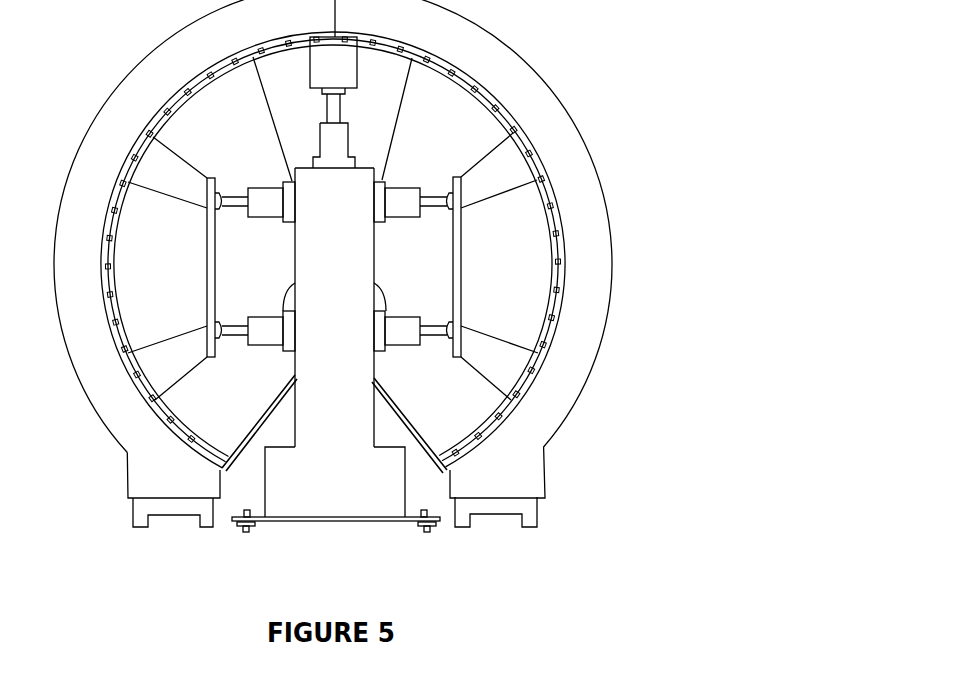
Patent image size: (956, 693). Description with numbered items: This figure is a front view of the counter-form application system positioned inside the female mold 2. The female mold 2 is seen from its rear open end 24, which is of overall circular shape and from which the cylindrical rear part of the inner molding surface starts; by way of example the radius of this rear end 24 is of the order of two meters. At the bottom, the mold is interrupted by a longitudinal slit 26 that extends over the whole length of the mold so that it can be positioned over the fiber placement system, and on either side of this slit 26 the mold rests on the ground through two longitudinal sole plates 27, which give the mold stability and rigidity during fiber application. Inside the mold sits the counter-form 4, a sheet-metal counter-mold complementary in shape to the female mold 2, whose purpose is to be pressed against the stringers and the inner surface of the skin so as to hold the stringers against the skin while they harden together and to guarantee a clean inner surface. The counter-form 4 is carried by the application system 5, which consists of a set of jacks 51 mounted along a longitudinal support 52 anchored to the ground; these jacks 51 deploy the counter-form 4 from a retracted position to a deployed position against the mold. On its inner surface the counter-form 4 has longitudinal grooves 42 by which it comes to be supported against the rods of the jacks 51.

The female mold 2 is at (96, 106).
The counter-form 4 is at (118, 228).
The rear open end 24 is at (530, 392).
The longitudinal grooves 42 is at (168, 352).
The jacks 51 is at (233, 202).
The application system 5 is at (359, 498).
The longitudinal slit 26 is at (240, 447).
The longitudinal support 52 is at (315, 473).
The sole plates 27 is at (139, 506).